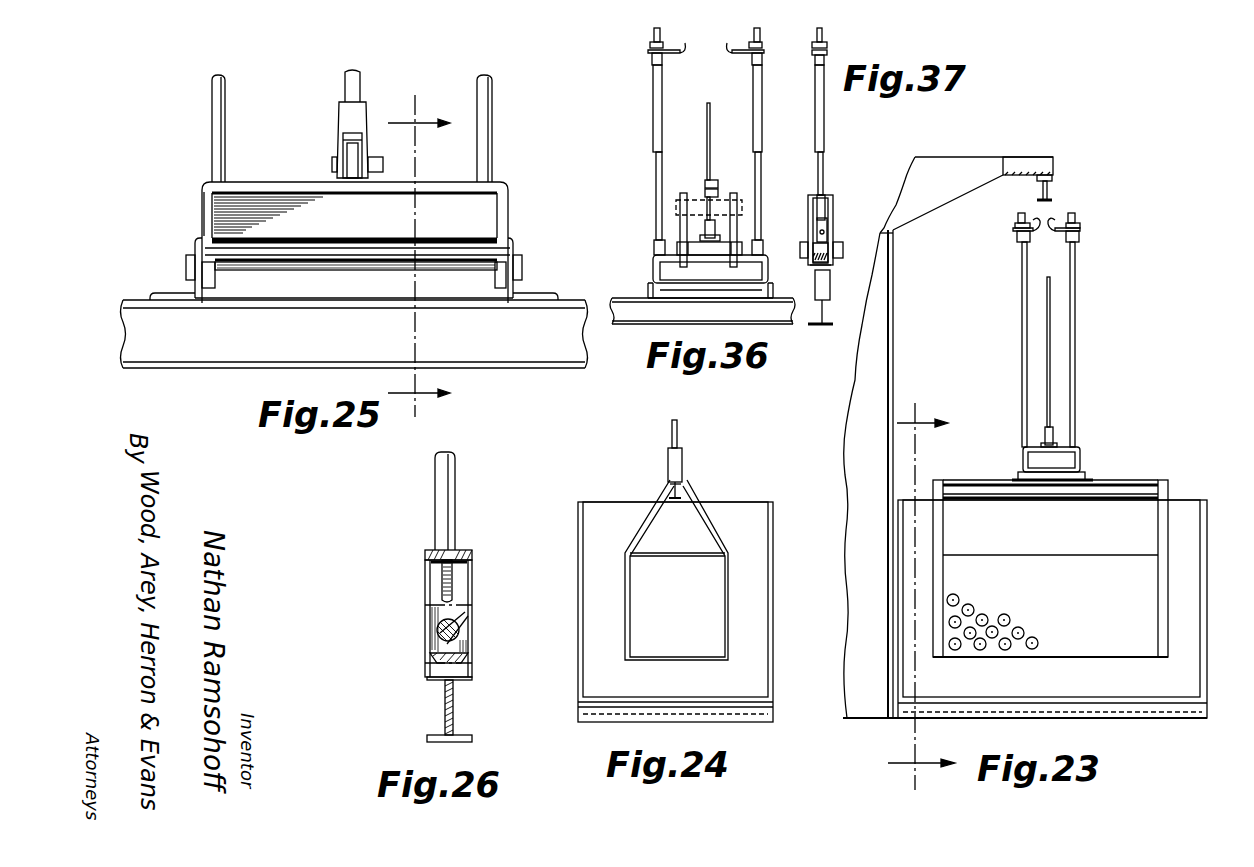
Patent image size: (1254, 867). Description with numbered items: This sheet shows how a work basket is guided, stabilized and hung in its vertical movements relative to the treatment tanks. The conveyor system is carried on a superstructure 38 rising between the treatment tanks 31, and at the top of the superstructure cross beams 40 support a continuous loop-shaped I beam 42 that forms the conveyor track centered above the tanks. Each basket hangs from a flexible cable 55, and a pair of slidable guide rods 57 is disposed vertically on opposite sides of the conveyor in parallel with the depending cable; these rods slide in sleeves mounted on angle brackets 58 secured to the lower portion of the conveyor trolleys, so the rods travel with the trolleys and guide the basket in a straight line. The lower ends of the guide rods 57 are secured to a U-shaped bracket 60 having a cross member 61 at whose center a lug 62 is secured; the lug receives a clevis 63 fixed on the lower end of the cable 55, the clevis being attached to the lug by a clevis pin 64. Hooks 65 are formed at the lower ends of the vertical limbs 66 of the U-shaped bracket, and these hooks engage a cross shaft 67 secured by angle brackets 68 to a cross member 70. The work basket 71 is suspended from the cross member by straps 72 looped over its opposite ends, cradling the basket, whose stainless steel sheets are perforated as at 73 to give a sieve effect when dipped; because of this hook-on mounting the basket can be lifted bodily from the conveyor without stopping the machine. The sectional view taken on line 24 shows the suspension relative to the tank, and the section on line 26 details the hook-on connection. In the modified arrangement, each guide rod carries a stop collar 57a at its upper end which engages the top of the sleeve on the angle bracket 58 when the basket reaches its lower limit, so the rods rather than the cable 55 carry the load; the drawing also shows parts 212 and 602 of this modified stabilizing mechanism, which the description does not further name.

In FIG. 23, the section line 24— 24 is at (921, 595).
In FIG. 25, the section line 26— 26 is at (415, 256).
In FIG. 23, the treatment tank 31 is at (1188, 494).
In FIG. 24, the treatment tank 31 is at (746, 498).
In FIG. 23, the superstructure 38 is at (889, 398).
In FIG. 23, the cross beam 40 is at (945, 155).
In FIG. 23, the I beam 42 is at (1052, 192).
In FIG. 25, the flexible cable 55 is at (345, 78).
In FIG. 36, the flexible cable 55 is at (710, 150).
In FIG. 37, the flexible cable 55 is at (818, 190).
In FIG. 23, the flexible cable 55 is at (1052, 282).
In FIG. 25, the guide rod 57 is at (212, 110).
In FIG. 36, the guide rod 57 is at (655, 112).
In FIG. 37, the guide rod 57 is at (825, 135).
In FIG. 23, the guide rod 57 is at (1022, 272).
In FIG. 24, the guide rod 57 is at (677, 435).
In FIG. 26, the guide rod 57 is at (455, 490).
In FIG. 36, the stop collar 57a is at (650, 45).
In FIG. 37, the stop collar 57a is at (827, 45).
In FIG. 36, the angle bracket 58 is at (680, 52).
In FIG. 37, the angle bracket 58 is at (819, 52).
In FIG. 23, the angle bracket 58 is at (1033, 218).
In FIG. 25, the U-shaped bracket 60 is at (505, 200).
In FIG. 36, the U-shaped bracket 60 is at (655, 262).
In FIG. 37, the U-shaped bracket 60 is at (812, 266).
In FIG. 23, the U-shaped bracket 60 is at (1020, 447).
In FIG. 24, the U-shaped bracket 60 is at (688, 468).
In FIG. 26, the U-shaped bracket 60 is at (474, 546).
In FIG. 25, the cross member 61 is at (292, 182).
In FIG. 26, the cross member 61 is at (432, 550).
In FIG. 25, the lug 62 is at (350, 165).
In FIG. 25, the clevis 63 is at (337, 122).
In FIG. 36, the clevis 63 is at (720, 238).
In FIG. 37, the clevis 63 is at (828, 232).
In FIG. 23, the clevis 63 is at (1053, 432).
In FIG. 25, the clevis pin 64 is at (383, 162).
In FIG. 25, the hook 65 is at (218, 270).
In FIG. 26, the hook 65 is at (466, 646).
In FIG. 25, the vertical limb 66 is at (202, 212).
In FIG. 26, the vertical limb 66 is at (425, 586).
In FIG. 25, the cross shaft 67 is at (352, 278).
In FIG. 23, the cross shaft 67 is at (1022, 468).
In FIG. 26, the cross shaft 67 is at (462, 628).
In FIG. 25, the angle bracket 68 is at (165, 294).
In FIG. 23, the angle bracket 68 is at (1090, 478).
In FIG. 26, the angle bracket 68 is at (430, 656).
In FIG. 25, the cross member 70 is at (565, 300).
In FIG. 36, the cross member 70 is at (702, 311).
In FIG. 37, the cross member 70 is at (822, 320).
In FIG. 23, the cross member 70 is at (1127, 480).
In FIG. 24, the cross member 70 is at (670, 492).
In FIG. 26, the cross member 70 is at (465, 682).
In FIG. 23, the work basket 71 is at (1125, 657).
In FIG. 24, the work basket 71 is at (710, 612).
In FIG. 23, the strap 72 is at (1168, 590).
In FIG. 24, the strap 72 is at (635, 540).
In FIG. 23, the perforation 73 is at (1037, 640).
In FIG. 36, the guide 212 is at (690, 235).
In FIG. 37, the guide 212 is at (843, 255).
In FIG. 36, the housing 602 is at (698, 170).
In FIG. 37, the housing 602 is at (836, 200).